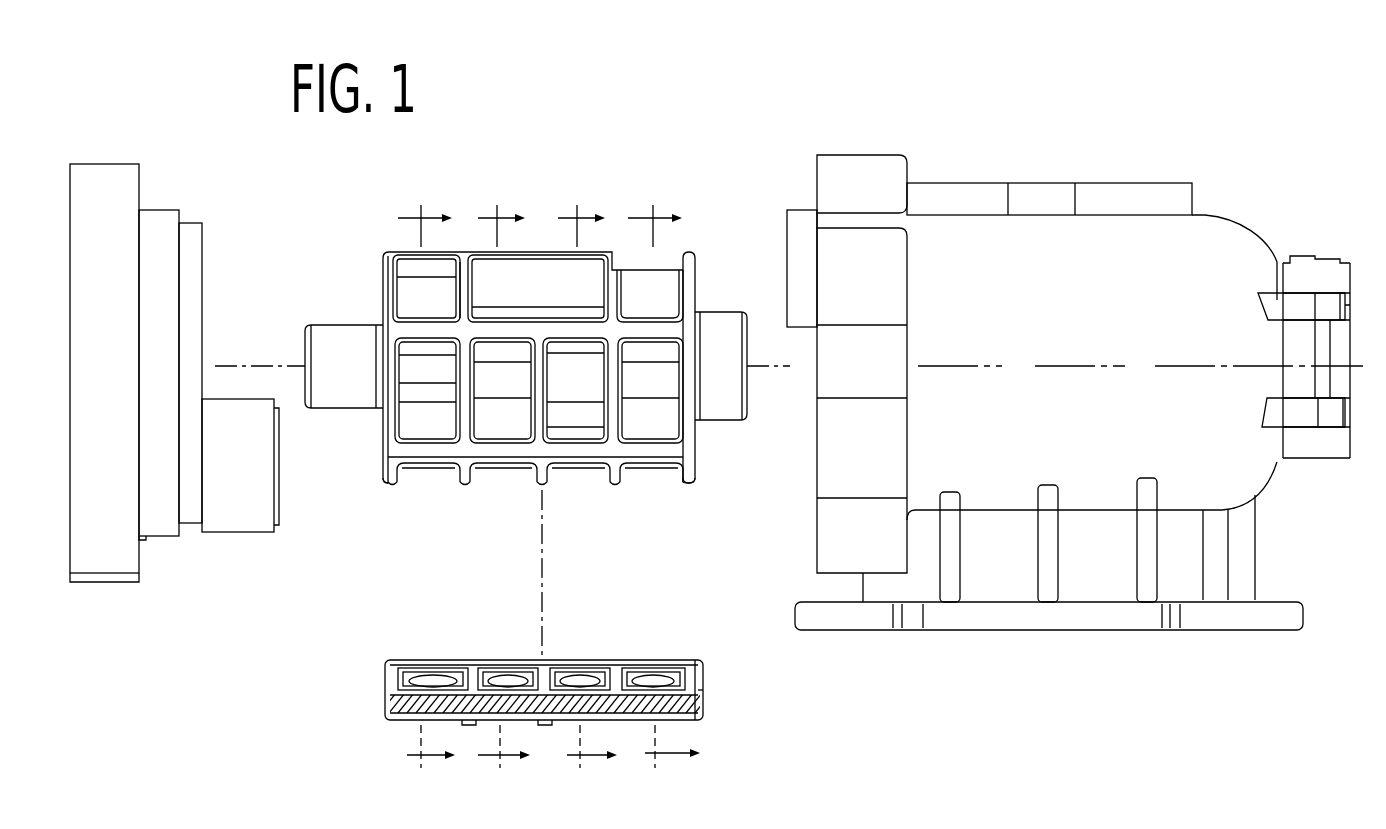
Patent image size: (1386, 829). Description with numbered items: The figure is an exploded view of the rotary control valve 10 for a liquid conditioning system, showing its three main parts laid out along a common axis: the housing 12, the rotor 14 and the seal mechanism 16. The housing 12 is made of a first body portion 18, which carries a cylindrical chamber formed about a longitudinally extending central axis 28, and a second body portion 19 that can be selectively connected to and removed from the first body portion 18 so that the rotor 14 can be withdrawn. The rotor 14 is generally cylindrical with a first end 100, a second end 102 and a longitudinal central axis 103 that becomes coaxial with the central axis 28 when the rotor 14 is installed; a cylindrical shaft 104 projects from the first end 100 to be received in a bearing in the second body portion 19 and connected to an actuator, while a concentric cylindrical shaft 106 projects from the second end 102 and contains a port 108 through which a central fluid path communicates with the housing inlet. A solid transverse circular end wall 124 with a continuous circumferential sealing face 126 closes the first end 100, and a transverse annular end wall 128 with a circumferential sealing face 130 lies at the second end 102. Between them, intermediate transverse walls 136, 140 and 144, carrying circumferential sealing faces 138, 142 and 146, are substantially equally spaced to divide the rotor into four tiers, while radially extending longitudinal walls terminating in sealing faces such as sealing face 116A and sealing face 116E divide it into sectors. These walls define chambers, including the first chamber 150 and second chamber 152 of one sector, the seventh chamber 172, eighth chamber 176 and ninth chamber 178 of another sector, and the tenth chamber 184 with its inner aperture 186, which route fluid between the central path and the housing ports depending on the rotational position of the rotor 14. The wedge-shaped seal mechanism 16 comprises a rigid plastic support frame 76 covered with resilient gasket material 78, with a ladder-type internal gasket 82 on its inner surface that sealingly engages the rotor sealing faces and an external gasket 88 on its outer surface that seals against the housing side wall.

The rotary control valve 10 is at (736, 157).
The housing 12 is at (947, 158).
The rotor 14 is at (513, 198).
The seal mechanism 16 is at (561, 656).
The first body portion 18 is at (1033, 183).
The second body portion 19 is at (139, 183).
The central axis 28 is at (1055, 366).
The rigid support frame 76 is at (672, 714).
The gasket material 78 is at (591, 715).
The internal gasket 82 is at (463, 661).
The external gasket 88 is at (470, 728).
The first end 100 is at (385, 280).
The second end 102 is at (696, 277).
The longitudinal central axis 103 is at (762, 366).
The cylindrical shaft 104 is at (355, 409).
The cylindrical shaft 106 is at (716, 420).
The port 108 is at (747, 339).
The sealing face 116A is at (405, 453).
The sealing face 116E is at (423, 331).
The transverse circular end wall 124 is at (395, 468).
The circumferential sealing face 126 is at (393, 483).
The transverse annular end wall 128 is at (689, 471).
The circumferential sealing face 130 is at (689, 483).
The intermediate transverse wall 136 is at (450, 252).
The circumferential sealing face 138 is at (467, 483).
The intermediate transverse wall 140 is at (527, 348).
The circumferential sealing face 142 is at (543, 483).
The intermediate transverse wall 144 is at (611, 283).
The circumferential sealing face 146 is at (612, 252).
The first chamber 150 is at (432, 476).
The second chamber 152 is at (665, 477).
The seventh chamber 172 is at (417, 265).
The eighth chamber 176 is at (513, 258).
The ninth chamber 178 is at (657, 282).
The tenth chamber 184 is at (589, 432).
The inner aperture 186 is at (588, 377).